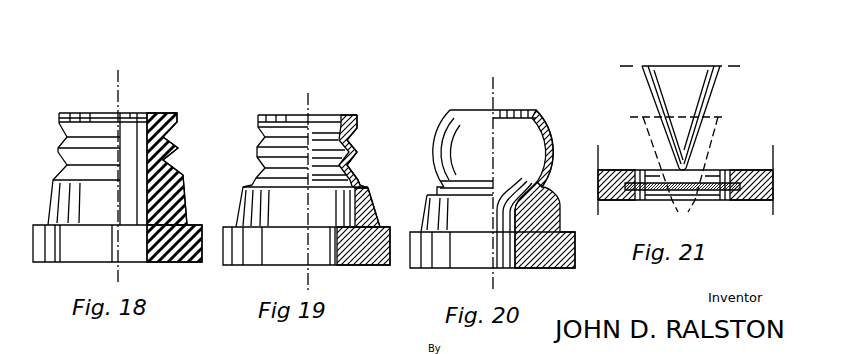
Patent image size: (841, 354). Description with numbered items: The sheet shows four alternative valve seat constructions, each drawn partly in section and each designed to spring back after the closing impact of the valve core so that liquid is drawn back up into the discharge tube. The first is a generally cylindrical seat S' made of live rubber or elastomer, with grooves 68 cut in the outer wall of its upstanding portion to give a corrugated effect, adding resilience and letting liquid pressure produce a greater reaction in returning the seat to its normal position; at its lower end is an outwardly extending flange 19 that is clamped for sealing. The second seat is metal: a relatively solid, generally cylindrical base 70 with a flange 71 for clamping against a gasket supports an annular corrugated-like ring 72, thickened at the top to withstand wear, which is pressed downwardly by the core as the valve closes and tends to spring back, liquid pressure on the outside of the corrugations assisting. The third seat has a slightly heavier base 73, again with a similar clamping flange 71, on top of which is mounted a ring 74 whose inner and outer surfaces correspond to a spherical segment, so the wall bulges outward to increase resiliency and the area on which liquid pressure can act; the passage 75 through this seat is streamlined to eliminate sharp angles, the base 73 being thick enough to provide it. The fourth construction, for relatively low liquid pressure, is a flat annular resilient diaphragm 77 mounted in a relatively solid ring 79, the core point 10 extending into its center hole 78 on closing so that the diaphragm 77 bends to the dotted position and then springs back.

In FIG. 18, the grooves 68 is at (45, 136).
In FIG. 18, the seat S' is at (139, 93).
In FIG. 18, the flange 19 is at (202, 262).
In FIG. 19, the base 70 is at (371, 212).
In FIG. 19, the flange 71 is at (378, 267).
In FIG. 20, the flange 71 is at (573, 257).
In FIG. 19, the corrugated-like ring 72 is at (357, 153).
In FIG. 20, the base 73 is at (549, 202).
In FIG. 20, the ring 74 is at (476, 168).
In FIG. 20, the passage 75 is at (522, 190).
In FIG. 21, the core point 10 is at (682, 139).
In FIG. 21, the diaphragm 77 is at (698, 184).
In FIG. 21, the center hole 78 is at (680, 203).
In FIG. 21, the ring 79 is at (748, 197).